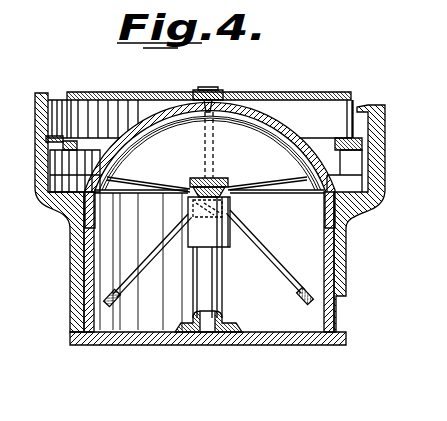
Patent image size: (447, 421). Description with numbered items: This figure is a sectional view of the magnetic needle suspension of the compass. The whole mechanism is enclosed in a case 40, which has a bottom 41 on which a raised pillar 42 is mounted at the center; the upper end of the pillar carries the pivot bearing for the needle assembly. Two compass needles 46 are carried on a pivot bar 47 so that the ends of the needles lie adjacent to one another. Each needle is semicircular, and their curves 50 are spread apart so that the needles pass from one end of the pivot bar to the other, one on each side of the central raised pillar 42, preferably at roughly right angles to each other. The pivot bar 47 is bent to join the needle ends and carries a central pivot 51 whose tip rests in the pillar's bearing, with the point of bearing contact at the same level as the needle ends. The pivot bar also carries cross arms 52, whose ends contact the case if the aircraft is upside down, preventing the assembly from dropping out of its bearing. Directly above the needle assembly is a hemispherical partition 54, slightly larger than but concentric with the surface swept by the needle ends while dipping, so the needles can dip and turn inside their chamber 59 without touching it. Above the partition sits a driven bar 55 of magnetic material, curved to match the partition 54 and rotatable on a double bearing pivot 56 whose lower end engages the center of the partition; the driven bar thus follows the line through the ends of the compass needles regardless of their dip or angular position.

The case 40 is at (346, 284).
The bottom 41 is at (268, 345).
The raised pillar 42 is at (226, 286).
The compass needles 46 is at (160, 255).
The pivot bar 47 is at (228, 181).
The curves 50 is at (120, 302).
The central pivot 51 is at (210, 178).
The cross arms 52 is at (277, 184).
The hemispherical partition 54 is at (281, 132).
The driven bar 55 is at (214, 156).
The double bearing pivot 56 is at (212, 92).
The chamber 59 is at (314, 220).